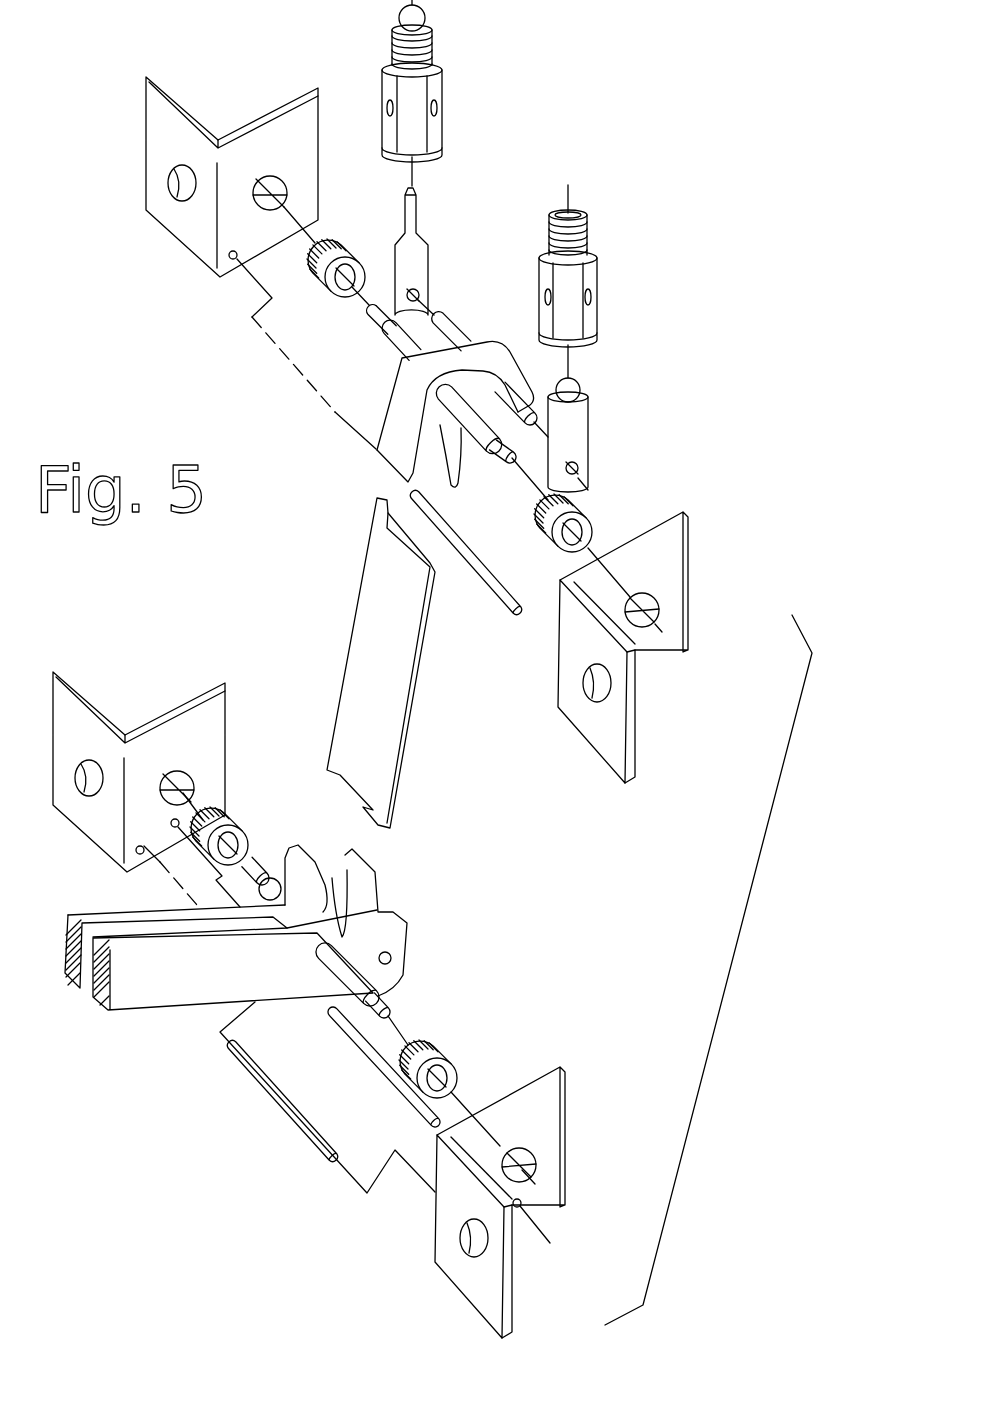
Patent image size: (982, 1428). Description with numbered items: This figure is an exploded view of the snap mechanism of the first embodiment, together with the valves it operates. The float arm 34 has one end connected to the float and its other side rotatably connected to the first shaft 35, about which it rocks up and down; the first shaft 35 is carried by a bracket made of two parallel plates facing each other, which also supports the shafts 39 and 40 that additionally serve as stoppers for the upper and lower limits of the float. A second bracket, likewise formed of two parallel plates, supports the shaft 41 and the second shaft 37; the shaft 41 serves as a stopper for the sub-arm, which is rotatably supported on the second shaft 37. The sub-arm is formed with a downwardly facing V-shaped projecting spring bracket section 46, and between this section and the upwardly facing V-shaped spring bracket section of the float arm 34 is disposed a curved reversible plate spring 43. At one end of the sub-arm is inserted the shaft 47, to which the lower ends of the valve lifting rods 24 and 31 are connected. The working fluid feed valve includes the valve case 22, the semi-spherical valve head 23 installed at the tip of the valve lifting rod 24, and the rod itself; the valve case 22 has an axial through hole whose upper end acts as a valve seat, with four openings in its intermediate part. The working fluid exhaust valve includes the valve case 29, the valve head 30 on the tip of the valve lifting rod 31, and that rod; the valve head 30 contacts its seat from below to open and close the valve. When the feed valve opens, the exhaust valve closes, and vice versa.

The valve case 22 is at (443, 109).
The valve head 23 is at (428, 15).
The valve lifting rod 24 is at (416, 226).
The valve case 29 is at (598, 286).
The valve head 30 is at (580, 383).
The valve lifting rod 31 is at (590, 432).
The float arm 34 is at (167, 1007).
The first shaft 35 is at (353, 977).
The second shaft 37 is at (392, 348).
The shaft 39 is at (300, 1138).
The shaft 40 is at (352, 1043).
The shaft 41 is at (493, 597).
The reversible plate spring 43 is at (357, 605).
The spring bracket section 46 is at (380, 425).
The shaft 47 is at (462, 336).